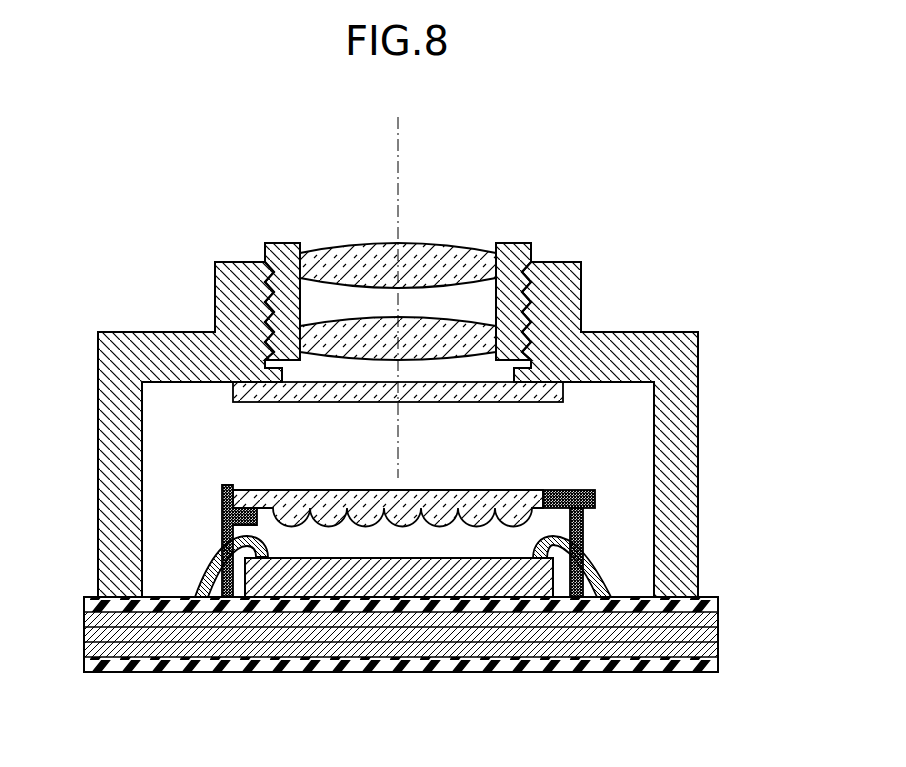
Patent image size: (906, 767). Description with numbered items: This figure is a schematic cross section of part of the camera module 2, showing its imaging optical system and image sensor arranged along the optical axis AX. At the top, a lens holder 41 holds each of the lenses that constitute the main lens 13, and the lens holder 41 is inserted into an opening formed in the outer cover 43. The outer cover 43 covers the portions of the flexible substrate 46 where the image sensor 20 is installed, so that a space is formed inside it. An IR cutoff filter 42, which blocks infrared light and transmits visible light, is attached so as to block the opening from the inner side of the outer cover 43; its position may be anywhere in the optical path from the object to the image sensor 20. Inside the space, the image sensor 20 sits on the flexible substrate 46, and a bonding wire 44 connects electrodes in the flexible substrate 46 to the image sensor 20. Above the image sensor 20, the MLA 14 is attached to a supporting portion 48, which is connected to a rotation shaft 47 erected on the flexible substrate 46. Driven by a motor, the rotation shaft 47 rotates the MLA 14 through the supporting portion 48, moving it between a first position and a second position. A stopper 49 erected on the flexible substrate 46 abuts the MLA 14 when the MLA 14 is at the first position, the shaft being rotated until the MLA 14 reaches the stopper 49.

The camera module 2 is at (420, 414).
The main lens 13 is at (467, 328).
The lens holder 41 is at (515, 245).
The IR cutoff filter 42 is at (553, 400).
The outer cover 43 is at (698, 401).
The MLA 14 is at (503, 534).
The supporting portion 48 is at (585, 492).
The bonding wire 44 is at (222, 528).
The stopper 49 is at (227, 498).
The rotation shaft 47 is at (583, 540).
The image sensor 20 is at (546, 588).
The flexible substrate 46 is at (74, 597).
The optical axis AX is at (398, 147).